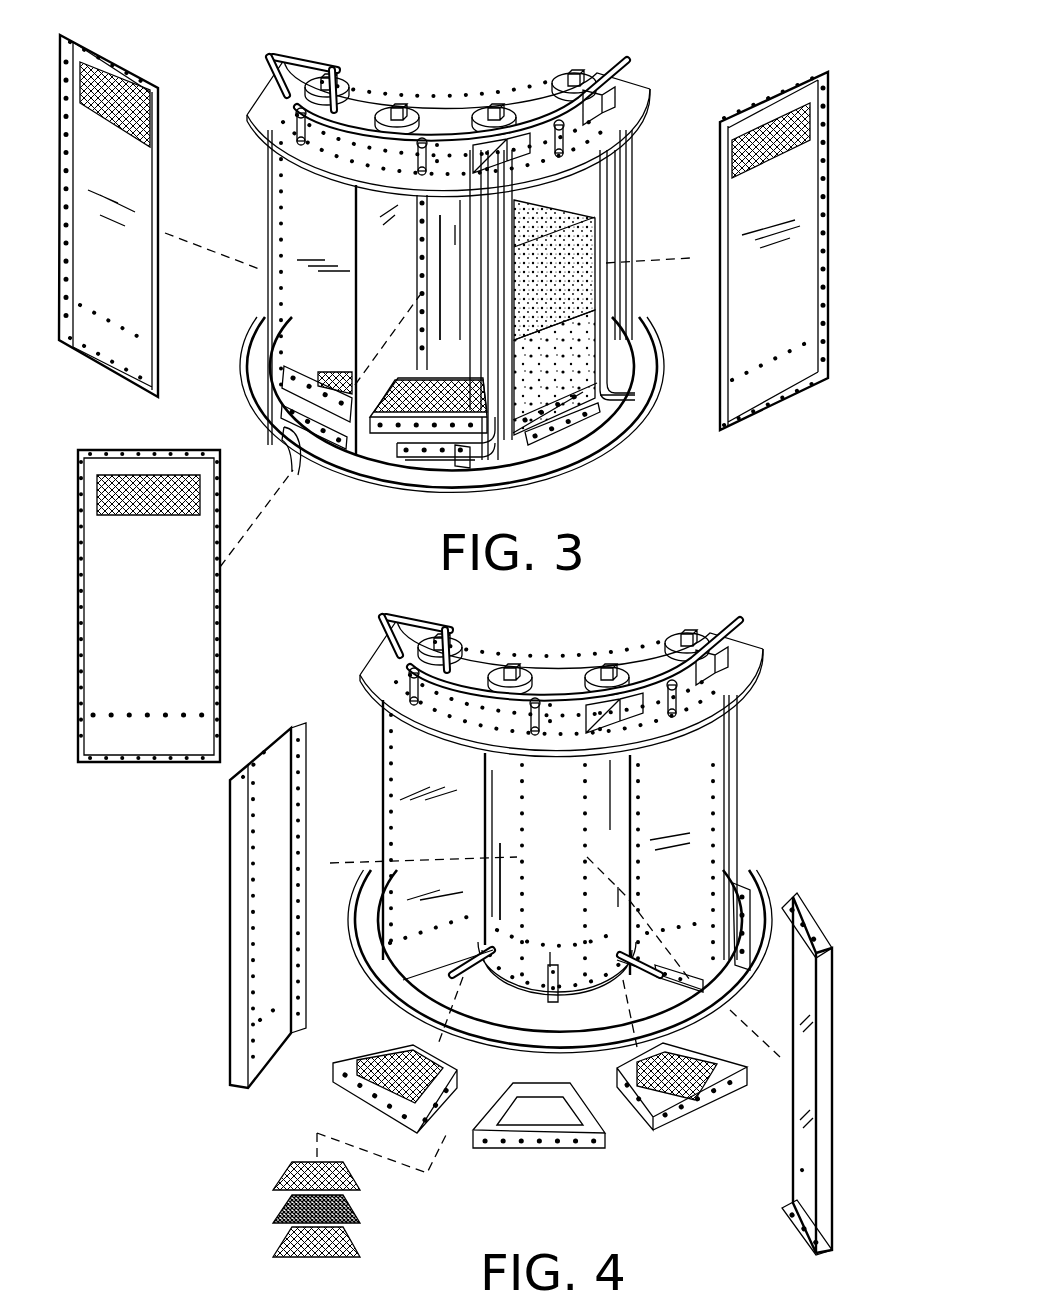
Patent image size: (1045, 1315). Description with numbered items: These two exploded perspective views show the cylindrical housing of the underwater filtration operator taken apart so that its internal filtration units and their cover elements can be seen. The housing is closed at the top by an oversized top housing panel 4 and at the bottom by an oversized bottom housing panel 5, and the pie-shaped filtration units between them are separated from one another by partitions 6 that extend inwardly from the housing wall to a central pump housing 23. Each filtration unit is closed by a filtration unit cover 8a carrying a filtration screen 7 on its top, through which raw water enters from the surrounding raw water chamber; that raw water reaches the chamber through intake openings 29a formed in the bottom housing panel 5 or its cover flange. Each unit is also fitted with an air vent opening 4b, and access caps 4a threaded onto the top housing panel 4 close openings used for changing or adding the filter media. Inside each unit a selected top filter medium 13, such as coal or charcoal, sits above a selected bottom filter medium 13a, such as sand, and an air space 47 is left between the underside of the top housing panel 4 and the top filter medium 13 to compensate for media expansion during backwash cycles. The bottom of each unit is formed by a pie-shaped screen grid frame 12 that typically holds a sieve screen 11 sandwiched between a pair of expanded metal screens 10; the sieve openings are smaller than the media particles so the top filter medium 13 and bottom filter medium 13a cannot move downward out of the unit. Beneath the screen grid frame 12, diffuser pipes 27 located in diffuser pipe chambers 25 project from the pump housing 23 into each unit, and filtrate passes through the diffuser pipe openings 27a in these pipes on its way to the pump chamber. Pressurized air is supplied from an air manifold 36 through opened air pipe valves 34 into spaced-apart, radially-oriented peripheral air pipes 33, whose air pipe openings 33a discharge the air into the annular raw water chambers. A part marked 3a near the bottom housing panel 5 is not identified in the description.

In FIG. 4, the base bracket 3a is at (730, 1010).
In FIG. 3, the top housing panel 4 is at (638, 98).
In FIG. 4, the top housing panel 4 is at (750, 660).
In FIG. 3, the access caps 4a is at (402, 104).
In FIG. 4, the access caps 4a is at (512, 672).
In FIG. 3, the air vent opening 4b is at (342, 146).
In FIG. 3, the bottom housing panel 5 is at (258, 372).
In FIG. 4, the bottom housing panel 5 is at (360, 950).
In FIG. 3, the partitions 6 is at (380, 243).
In FIG. 4, the partitions 6 is at (430, 775).
In FIG. 3, the filtration screen 7 is at (122, 78).
In FIG. 3, the filtration unit cover 8a is at (155, 178).
In FIG. 3, the expanded metal screens 10 is at (340, 372).
In FIG. 4, the expanded metal screens 10 is at (402, 1055).
In FIG. 4, the sieve screen 11 is at (275, 1210).
In FIG. 3, the screen grid frame 12 is at (284, 364).
In FIG. 4, the screen grid frame 12 is at (376, 1108).
In FIG. 3, the top filter medium 13 is at (560, 240).
In FIG. 3, the bottom filter medium 13a is at (572, 340).
In FIG. 3, the pump housing 23 is at (466, 247).
In FIG. 4, the pump housing 23 is at (574, 808).
In FIG. 3, the diffuser pipe chambers 25 is at (470, 478).
In FIG. 4, the diffuser pipes 27 is at (548, 995).
In FIG. 4, the diffuser pipe openings 27a is at (472, 958).
In FIG. 3, the intake openings 29a is at (296, 474).
In FIG. 4, the intake openings 29a is at (752, 900).
In FIG. 3, the peripheral air pipes 33 is at (295, 402).
In FIG. 3, the air pipe openings 33a is at (425, 458).
In FIG. 3, the air pipe valves 34 is at (425, 170).
In FIG. 4, the air pipe valves 34 is at (530, 735).
In FIG. 3, the air manifold 36 is at (629, 58).
In FIG. 4, the air manifold 36 is at (741, 620).
In FIG. 3, the air space 47 is at (593, 212).